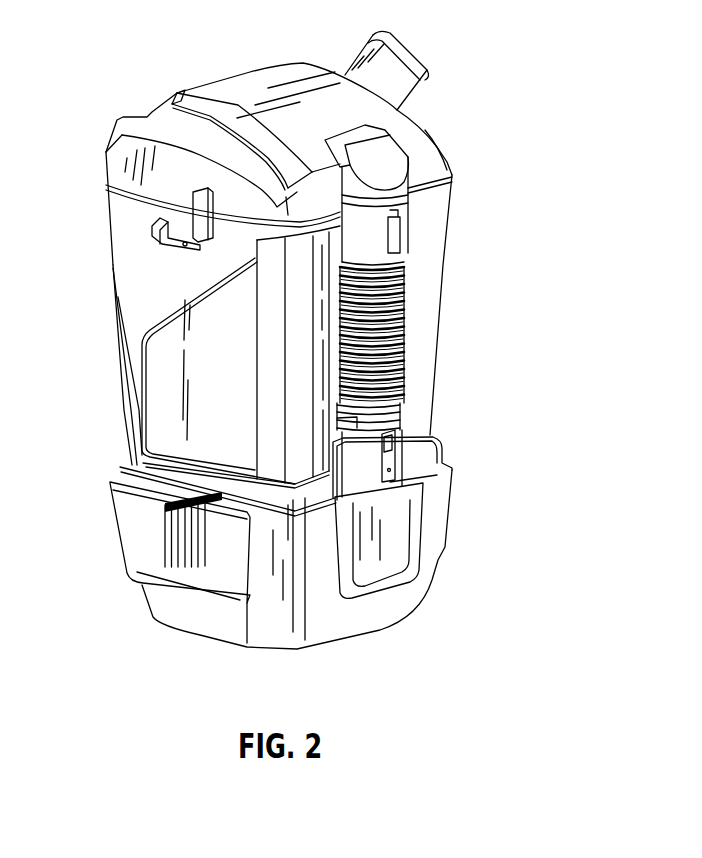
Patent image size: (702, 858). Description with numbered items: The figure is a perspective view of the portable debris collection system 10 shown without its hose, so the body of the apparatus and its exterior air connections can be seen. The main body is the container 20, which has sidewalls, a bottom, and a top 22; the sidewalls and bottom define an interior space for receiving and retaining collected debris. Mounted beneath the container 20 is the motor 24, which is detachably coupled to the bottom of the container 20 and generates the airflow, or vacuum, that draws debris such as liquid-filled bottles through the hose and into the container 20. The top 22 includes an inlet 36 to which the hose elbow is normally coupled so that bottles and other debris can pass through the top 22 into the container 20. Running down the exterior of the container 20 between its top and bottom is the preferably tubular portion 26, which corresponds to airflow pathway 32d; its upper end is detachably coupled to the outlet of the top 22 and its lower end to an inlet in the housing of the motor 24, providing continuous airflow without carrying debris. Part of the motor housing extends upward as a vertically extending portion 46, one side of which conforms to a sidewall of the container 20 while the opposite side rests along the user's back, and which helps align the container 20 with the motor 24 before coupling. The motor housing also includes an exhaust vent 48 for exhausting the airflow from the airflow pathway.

The debris collection system 10 is at (505, 199).
The container 20 is at (120, 204).
The top 22 is at (252, 82).
The motor 24 is at (428, 540).
The portion 26 is at (403, 318).
The airflow pathway 32d is at (369, 450).
The inlet 36 is at (407, 83).
The vertically extending portion 46 is at (122, 372).
The exhaust vent 48 is at (186, 565).